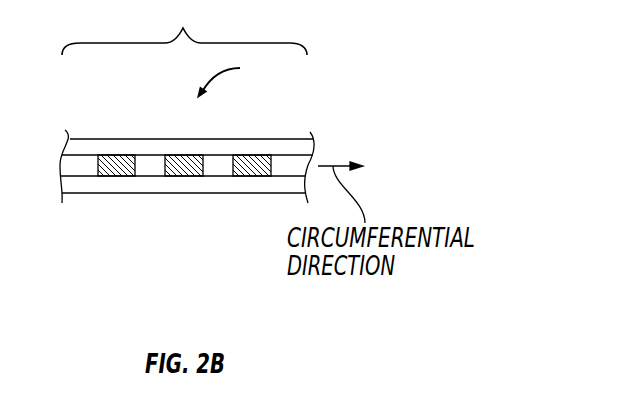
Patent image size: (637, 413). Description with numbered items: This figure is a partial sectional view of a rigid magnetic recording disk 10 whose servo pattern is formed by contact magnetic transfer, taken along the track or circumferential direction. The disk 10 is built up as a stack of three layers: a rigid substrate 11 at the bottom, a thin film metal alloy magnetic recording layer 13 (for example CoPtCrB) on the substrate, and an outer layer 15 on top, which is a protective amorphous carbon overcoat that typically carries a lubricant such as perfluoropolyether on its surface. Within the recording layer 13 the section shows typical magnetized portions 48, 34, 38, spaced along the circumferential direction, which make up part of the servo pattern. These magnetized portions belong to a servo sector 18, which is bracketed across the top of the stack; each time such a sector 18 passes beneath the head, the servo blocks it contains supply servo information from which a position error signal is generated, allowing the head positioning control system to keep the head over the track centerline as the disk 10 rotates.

The magnetic recording disk 10 is at (235, 78).
The rigid substrate 11 is at (65, 187).
The magnetic recording layer 13 is at (75, 170).
The outer layer 15 is at (71, 146).
The servo sector 18 is at (184, 28).
The magnetized portion 34 is at (180, 155).
The magnetized portion 38 is at (247, 155).
The magnetized portion 48 is at (110, 155).